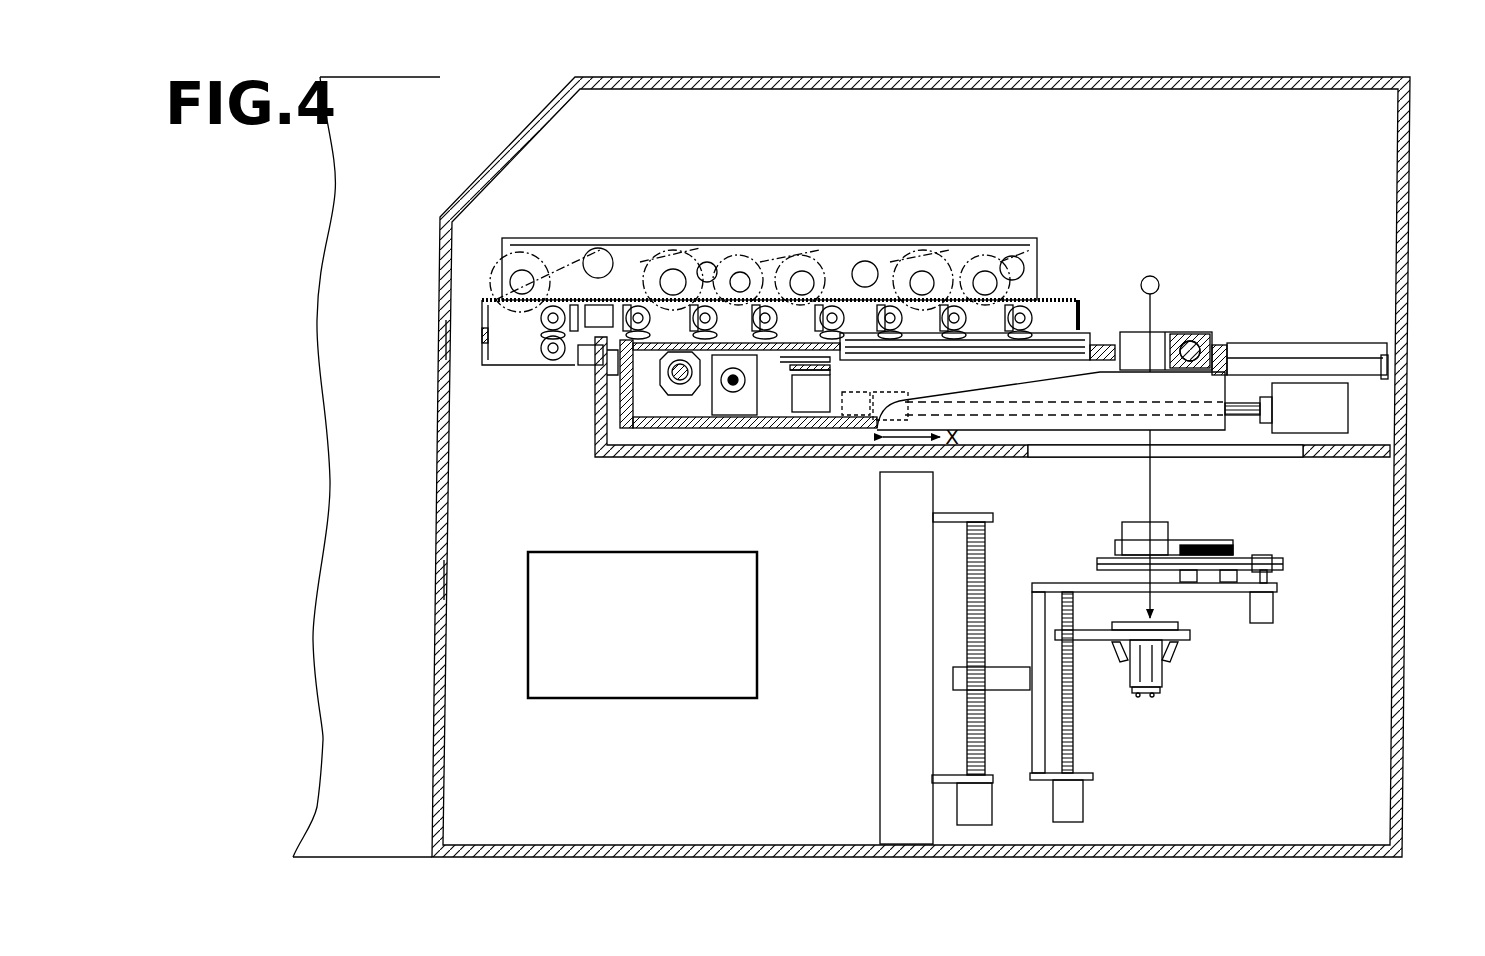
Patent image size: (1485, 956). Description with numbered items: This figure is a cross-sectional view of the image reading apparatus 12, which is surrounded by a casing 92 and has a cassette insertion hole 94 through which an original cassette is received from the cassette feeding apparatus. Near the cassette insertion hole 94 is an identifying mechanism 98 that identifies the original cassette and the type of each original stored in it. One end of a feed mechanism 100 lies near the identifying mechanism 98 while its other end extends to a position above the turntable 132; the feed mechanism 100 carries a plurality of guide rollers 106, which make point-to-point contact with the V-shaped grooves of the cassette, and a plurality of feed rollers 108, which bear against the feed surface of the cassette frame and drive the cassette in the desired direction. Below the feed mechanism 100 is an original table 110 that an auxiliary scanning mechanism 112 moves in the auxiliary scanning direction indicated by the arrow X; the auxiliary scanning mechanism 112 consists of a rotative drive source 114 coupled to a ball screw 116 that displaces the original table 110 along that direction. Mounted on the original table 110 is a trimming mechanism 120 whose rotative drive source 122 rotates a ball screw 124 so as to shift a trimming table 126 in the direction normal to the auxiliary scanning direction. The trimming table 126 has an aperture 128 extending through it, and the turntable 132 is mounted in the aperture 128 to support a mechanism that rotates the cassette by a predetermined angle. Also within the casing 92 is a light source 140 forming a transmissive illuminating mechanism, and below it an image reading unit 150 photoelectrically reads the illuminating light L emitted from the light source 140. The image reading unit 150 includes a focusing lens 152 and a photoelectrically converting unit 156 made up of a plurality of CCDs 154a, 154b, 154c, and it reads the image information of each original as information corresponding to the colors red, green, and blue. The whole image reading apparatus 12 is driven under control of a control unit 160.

The image reading apparatus 12 is at (546, 110).
The casing 92 is at (448, 577).
The cassette insertion hole 94 is at (448, 340).
The identifying mechanism 98 is at (578, 356).
The feed mechanism 100 is at (725, 238).
The guide rollers 106 is at (537, 334).
The feed rollers 108 is at (640, 306).
The original table 110 is at (623, 408).
The auxiliary scanning mechanism 112 is at (1293, 370).
The rotative drive source 114 is at (1330, 428).
The ball screw 116 is at (1242, 417).
The trimming mechanism 120 is at (706, 408).
The rotative drive source 122 is at (738, 414).
The ball screw 124 is at (741, 386).
The trimming table 126 is at (668, 386).
The aperture 128 is at (1126, 331).
The turntable 132 is at (1096, 342).
The light source 140 is at (1155, 277).
The illuminating light L is at (1153, 497).
The image reading unit 150 is at (1285, 600).
The focusing lens 152 is at (1166, 532).
The CCD 154a is at (1123, 654).
The CCD 154b is at (1148, 694).
The CCD 154c is at (1173, 658).
The photoelectrically converting unit 156 is at (1174, 665).
The control unit 160 is at (697, 688).